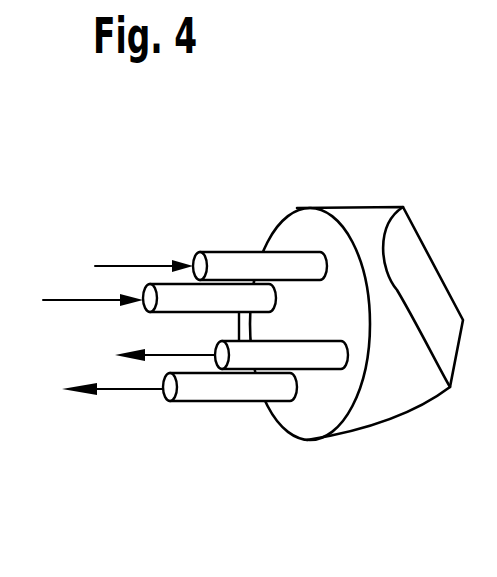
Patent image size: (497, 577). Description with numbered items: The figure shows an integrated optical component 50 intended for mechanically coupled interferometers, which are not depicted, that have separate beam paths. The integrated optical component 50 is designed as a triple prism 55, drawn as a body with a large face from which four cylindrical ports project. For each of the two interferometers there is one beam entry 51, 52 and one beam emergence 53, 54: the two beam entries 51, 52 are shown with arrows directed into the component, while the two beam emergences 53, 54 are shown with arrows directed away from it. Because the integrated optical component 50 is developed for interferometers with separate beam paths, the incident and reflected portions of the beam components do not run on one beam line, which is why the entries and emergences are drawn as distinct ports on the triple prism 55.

The integrated optical component 50 is at (242, 181).
The beam entry 51 is at (130, 265).
The beam entry 52 is at (68, 300).
The beam emergence 53 is at (155, 355).
The beam emergence 54 is at (105, 390).
The triple prism 55 is at (415, 283).